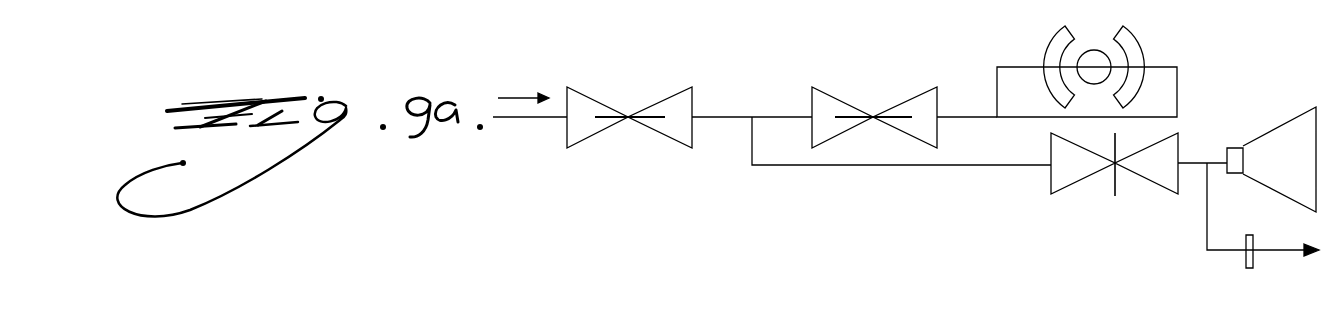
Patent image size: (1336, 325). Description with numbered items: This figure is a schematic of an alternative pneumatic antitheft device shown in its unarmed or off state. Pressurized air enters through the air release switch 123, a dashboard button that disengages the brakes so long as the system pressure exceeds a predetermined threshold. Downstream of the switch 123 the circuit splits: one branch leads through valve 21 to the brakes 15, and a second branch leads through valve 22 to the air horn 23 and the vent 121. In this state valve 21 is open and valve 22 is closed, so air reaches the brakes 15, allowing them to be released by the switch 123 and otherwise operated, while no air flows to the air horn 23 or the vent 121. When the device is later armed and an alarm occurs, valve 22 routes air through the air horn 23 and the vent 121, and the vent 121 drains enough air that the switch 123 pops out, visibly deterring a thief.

The air release switch 123 is at (646, 96).
The valve 21 is at (883, 114).
The brakes 15 is at (1152, 33).
The valve 22 is at (1076, 174).
The air horn 23 is at (1266, 176).
The vent 121 is at (1236, 267).